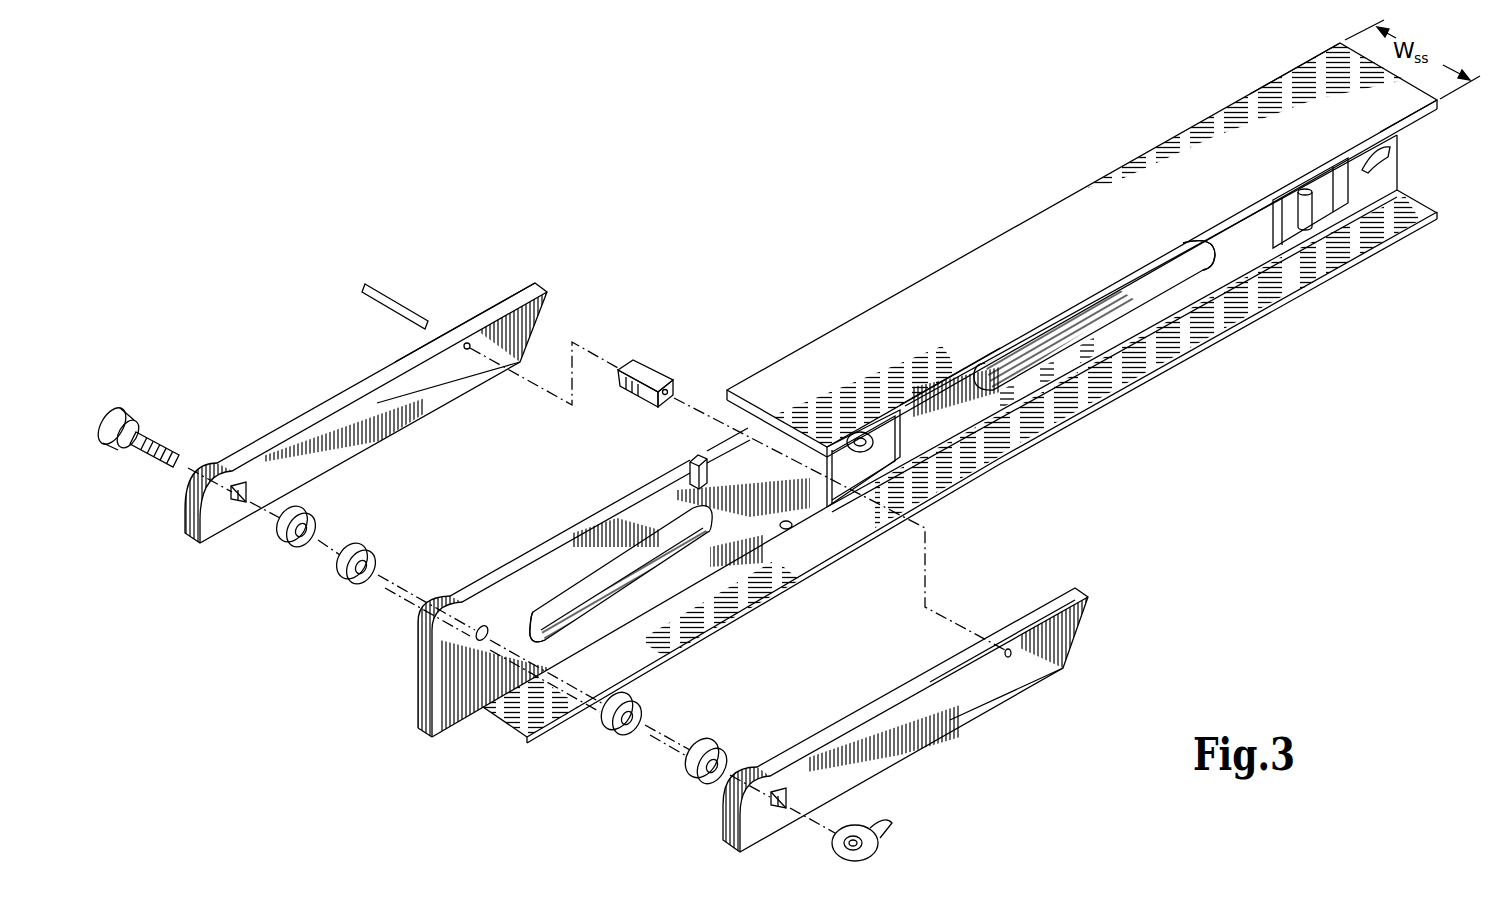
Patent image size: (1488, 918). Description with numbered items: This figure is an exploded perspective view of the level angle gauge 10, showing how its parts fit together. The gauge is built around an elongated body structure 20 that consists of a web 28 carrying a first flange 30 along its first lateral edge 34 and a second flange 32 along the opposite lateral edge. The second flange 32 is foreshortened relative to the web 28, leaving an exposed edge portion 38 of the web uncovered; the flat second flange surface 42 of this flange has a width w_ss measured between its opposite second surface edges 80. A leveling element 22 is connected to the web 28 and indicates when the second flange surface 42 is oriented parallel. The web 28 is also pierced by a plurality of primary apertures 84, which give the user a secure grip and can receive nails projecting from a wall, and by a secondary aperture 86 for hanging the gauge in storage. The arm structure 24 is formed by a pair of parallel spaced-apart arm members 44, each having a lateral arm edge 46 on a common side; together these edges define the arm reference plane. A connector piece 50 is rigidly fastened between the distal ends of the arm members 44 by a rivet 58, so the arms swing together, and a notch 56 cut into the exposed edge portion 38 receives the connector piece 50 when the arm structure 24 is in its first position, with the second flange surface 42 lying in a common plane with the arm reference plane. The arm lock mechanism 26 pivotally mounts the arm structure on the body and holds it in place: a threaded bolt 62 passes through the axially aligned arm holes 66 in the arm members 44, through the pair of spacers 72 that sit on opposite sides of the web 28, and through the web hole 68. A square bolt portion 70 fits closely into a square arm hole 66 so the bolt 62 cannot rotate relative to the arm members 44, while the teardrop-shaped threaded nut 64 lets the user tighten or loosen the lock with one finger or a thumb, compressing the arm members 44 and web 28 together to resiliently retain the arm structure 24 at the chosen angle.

The level angle gauge 10 is at (996, 100).
The elongated body structure 20 is at (1388, 185).
The leveling element 22 is at (848, 452).
The arm structure 24 is at (561, 307).
The arm lock mechanism 26 is at (310, 574).
The web 28 is at (447, 693).
The first flange 30 is at (1037, 427).
The second flange 32 is at (1060, 220).
The first lateral edge 34 is at (791, 526).
The exposed edge portion 38 is at (568, 535).
The second flat flange surface 42 is at (1044, 294).
The arm members 44 is at (377, 403).
The lateral arm edge 46 is at (395, 360).
The connector piece 50 is at (650, 362).
The notch 56 is at (690, 463).
The rivet 58 is at (368, 292).
The threaded bolt 62 is at (122, 406).
The threaded nut 64 is at (880, 842).
The arm hole 66 is at (250, 491).
The web hole 68 is at (476, 633).
The bolt portion 70 is at (138, 418).
The spacers 72 is at (355, 546).
The second surface edges 80 is at (1290, 68).
The primary apertures 84 is at (567, 598).
The secondary aperture 86 is at (1382, 155).